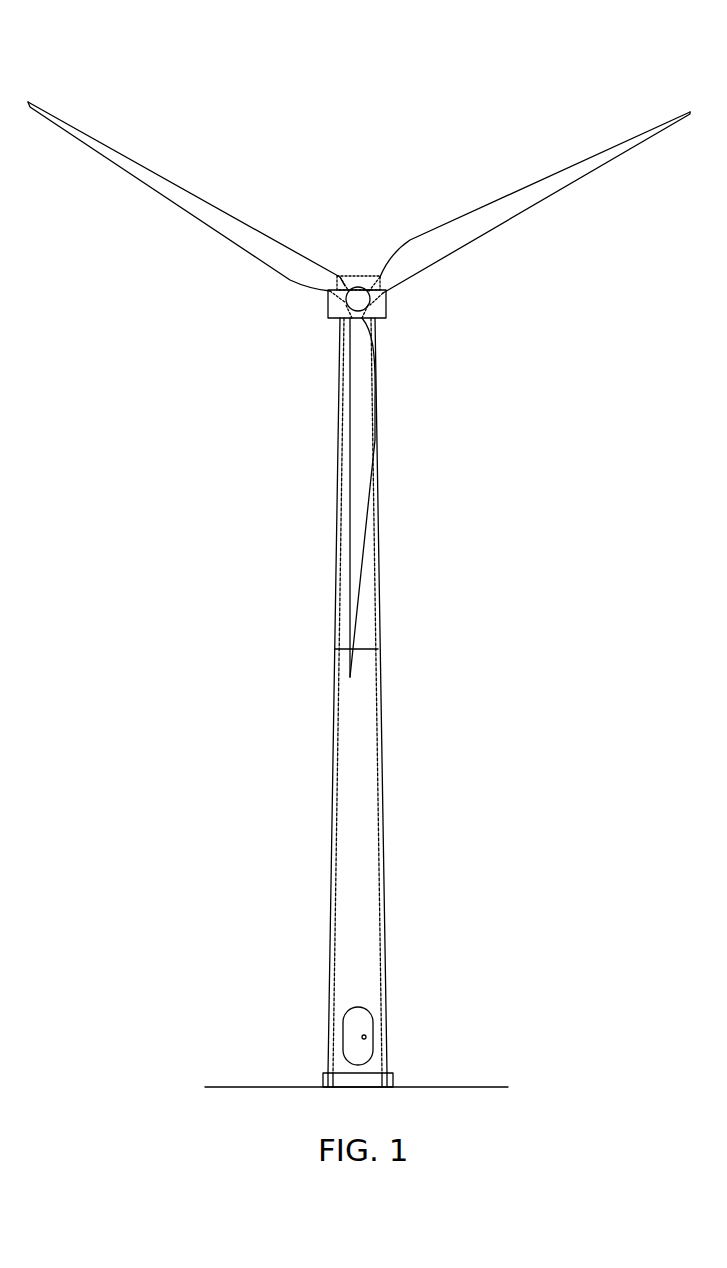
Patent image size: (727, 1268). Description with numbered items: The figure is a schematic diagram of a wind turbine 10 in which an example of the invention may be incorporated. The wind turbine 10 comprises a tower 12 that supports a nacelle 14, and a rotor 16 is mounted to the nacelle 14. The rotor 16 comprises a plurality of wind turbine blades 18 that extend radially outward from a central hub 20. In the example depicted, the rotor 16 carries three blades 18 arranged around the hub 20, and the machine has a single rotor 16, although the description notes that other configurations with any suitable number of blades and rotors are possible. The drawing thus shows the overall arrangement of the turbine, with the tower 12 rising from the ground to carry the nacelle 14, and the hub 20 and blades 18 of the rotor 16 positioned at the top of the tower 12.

The wind turbine 10 is at (583, 90).
The tower 12 is at (368, 748).
The nacelle 14 is at (386, 316).
The rotor 16 is at (310, 328).
The wind turbine blades 18 is at (258, 231).
The hub 20 is at (366, 292).